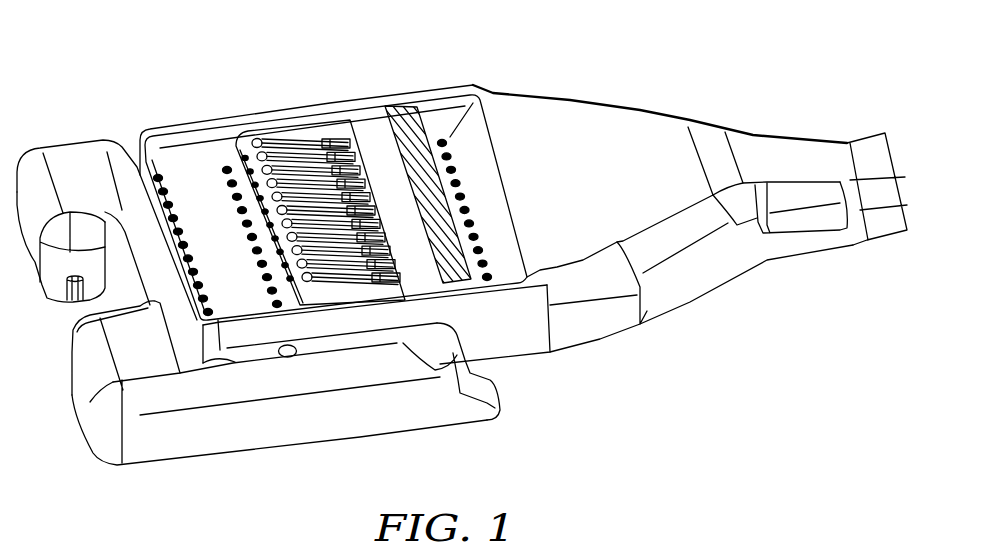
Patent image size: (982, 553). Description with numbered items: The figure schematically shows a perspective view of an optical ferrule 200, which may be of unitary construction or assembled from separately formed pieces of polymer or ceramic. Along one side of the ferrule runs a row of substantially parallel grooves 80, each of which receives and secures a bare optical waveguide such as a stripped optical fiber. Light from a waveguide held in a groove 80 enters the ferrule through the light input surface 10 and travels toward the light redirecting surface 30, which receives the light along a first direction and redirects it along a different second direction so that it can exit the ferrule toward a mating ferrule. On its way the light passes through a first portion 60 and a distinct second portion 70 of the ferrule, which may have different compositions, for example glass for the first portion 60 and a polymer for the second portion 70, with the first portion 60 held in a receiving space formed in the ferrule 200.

The optical ferrule 200 is at (178, 48).
The second portion 70 is at (512, 342).
The first portion 60 is at (375, 127).
The groove 80 is at (288, 147).
The light input surface 10 is at (337, 140).
The light redirecting surface 30 is at (423, 130).